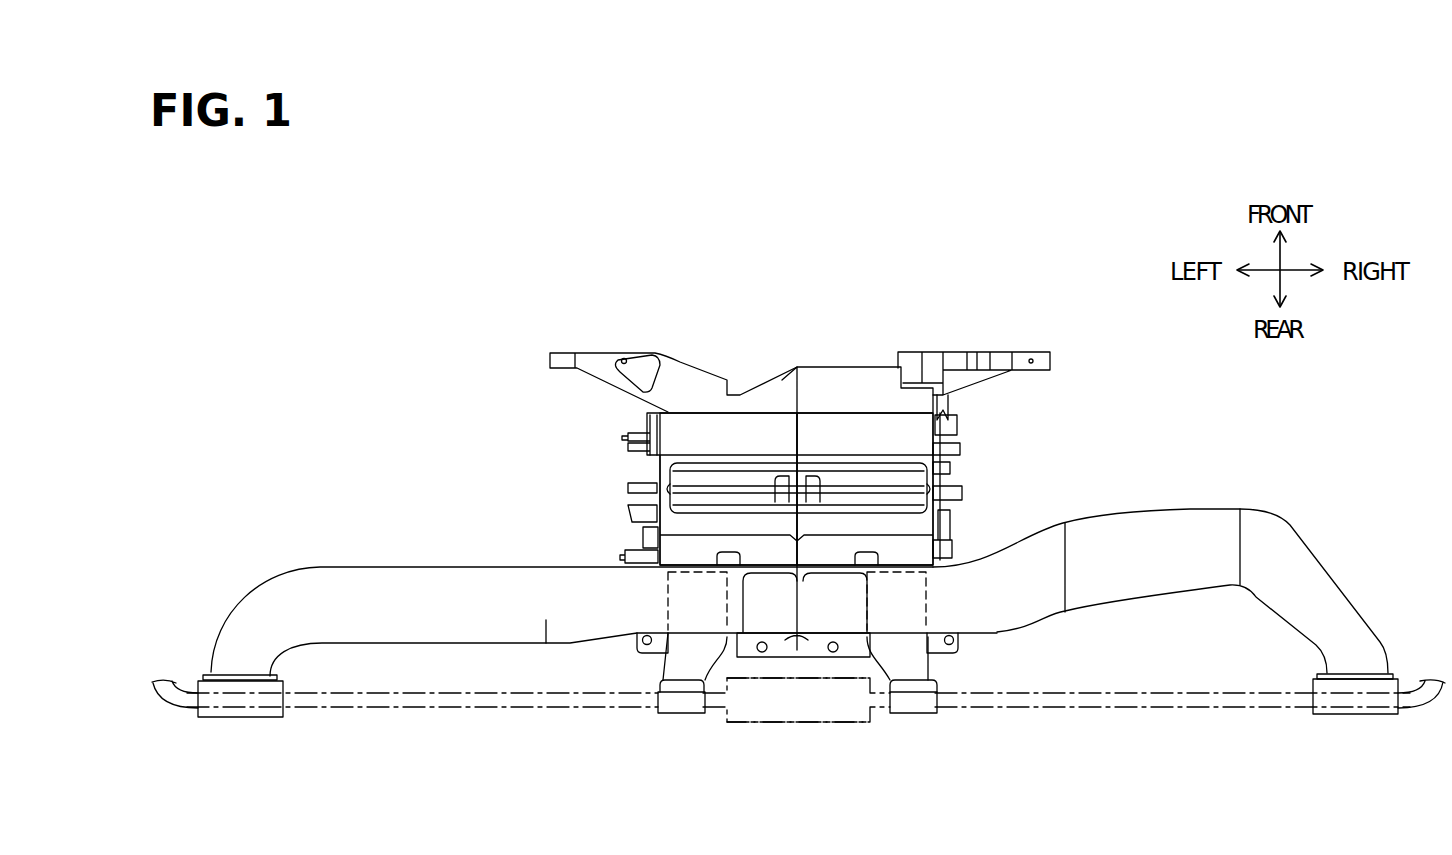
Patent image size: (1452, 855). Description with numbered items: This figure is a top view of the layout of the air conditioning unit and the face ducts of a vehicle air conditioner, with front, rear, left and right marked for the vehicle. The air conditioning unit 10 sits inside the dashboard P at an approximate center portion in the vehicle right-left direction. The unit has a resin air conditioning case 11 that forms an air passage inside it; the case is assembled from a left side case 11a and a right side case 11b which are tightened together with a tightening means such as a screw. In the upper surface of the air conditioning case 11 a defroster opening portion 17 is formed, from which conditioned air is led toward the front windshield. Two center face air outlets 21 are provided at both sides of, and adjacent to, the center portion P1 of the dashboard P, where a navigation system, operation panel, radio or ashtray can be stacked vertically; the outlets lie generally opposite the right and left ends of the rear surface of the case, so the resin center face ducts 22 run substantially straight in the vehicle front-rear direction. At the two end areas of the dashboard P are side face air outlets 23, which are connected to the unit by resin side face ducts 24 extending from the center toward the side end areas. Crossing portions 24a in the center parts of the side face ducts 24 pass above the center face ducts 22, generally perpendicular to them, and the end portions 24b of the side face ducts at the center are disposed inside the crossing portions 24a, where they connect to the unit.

The air conditioning unit 10 is at (795, 421).
The air conditioning case 11 is at (790, 421).
The left side case 11a is at (753, 423).
The right side case 11b is at (865, 445).
The defroster opening portion 17 is at (897, 482).
The center face air outlets 21 is at (918, 752).
The center face ducts 22 is at (985, 752).
The side face air outlets 23 is at (1356, 753).
The side face ducts 24 is at (799, 648).
The crossing portions 24a is at (795, 692).
The end portions 24b is at (773, 612).
The dashboard P is at (1140, 719).
The center portion P1 is at (797, 723).